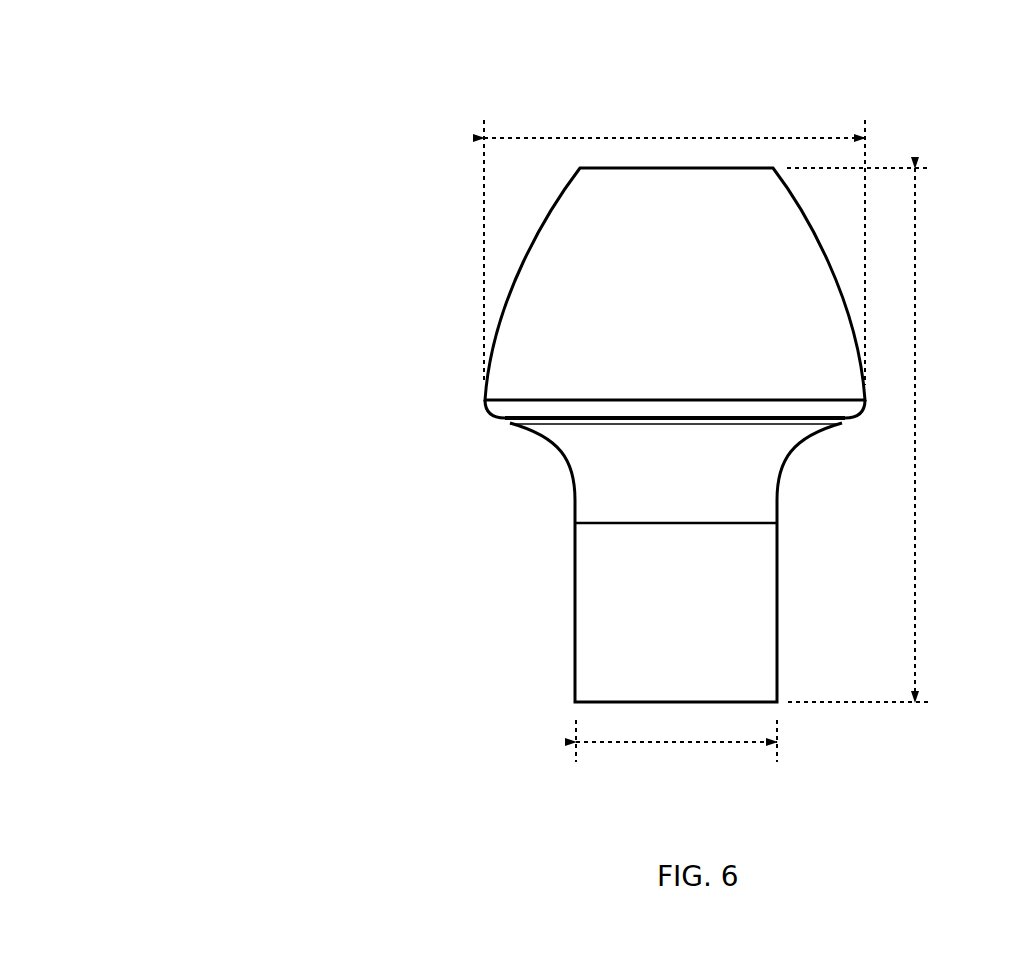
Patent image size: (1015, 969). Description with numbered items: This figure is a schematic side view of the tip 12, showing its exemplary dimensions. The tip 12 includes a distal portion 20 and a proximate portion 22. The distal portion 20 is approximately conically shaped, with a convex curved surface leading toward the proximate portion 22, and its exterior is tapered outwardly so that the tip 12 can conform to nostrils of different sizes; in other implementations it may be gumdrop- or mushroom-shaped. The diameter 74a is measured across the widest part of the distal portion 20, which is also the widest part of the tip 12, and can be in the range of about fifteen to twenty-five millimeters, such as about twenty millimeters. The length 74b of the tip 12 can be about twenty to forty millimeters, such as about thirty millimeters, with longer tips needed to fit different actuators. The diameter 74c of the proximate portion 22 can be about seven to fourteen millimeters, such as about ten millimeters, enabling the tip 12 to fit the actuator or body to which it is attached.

The tip 12 is at (184, 58).
The distal portion 20 is at (450, 182).
The proximate portion 22 is at (488, 428).
The diameter 74a is at (614, 138).
The length 74b is at (915, 512).
The diameter 74c is at (630, 742).